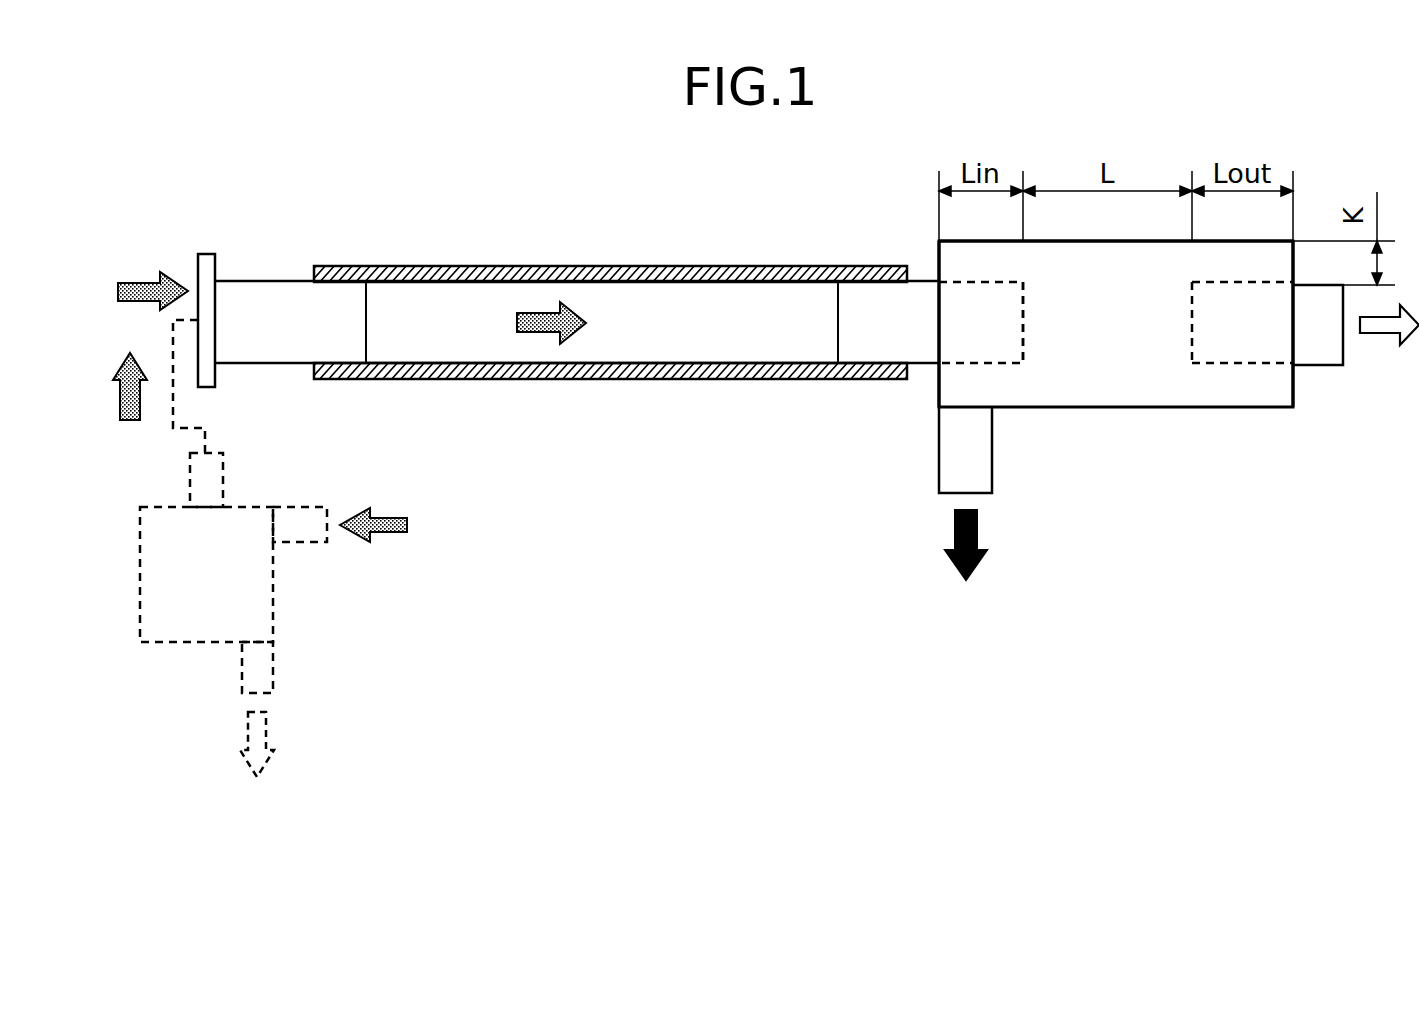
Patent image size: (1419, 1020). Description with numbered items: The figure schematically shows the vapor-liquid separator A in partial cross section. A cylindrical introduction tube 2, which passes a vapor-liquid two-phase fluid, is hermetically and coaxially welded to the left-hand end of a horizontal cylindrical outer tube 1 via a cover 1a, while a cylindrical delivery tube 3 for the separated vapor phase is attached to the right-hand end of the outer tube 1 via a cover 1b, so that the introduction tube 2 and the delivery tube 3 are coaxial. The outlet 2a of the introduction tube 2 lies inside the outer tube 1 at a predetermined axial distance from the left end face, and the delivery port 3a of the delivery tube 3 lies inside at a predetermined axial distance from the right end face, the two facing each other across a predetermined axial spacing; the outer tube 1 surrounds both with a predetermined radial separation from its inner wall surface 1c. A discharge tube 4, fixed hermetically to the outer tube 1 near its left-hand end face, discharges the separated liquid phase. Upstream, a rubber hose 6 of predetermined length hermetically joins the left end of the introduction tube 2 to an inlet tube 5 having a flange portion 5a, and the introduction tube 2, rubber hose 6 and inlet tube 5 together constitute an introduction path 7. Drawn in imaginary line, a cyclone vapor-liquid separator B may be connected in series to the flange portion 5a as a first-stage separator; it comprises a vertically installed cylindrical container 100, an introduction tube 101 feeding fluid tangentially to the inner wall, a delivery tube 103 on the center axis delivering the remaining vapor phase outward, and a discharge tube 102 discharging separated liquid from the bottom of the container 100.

The outer tube 1 is at (1127, 409).
The cover 1a is at (937, 392).
The cover 1b is at (1295, 388).
The inner wall surface 1c is at (1098, 250).
The introduction tube 2 is at (925, 277).
The outlet 2a is at (1023, 342).
The delivery tube 3 is at (1308, 368).
The delivery port 3a is at (1192, 342).
The discharge tube 4 is at (938, 458).
The inlet tube 5 is at (282, 280).
The flange portion 5a is at (206, 254).
The rubber hose 6 is at (569, 267).
The introduction path 7 is at (432, 322).
The cylindrical container 100 is at (277, 578).
The introduction tube 101 is at (300, 505).
The discharge tube 102 is at (277, 677).
The delivery tube 103 is at (227, 468).
The vapor-liquid separator A is at (1108, 458).
The cyclone vapor-liquid separator B is at (299, 607).